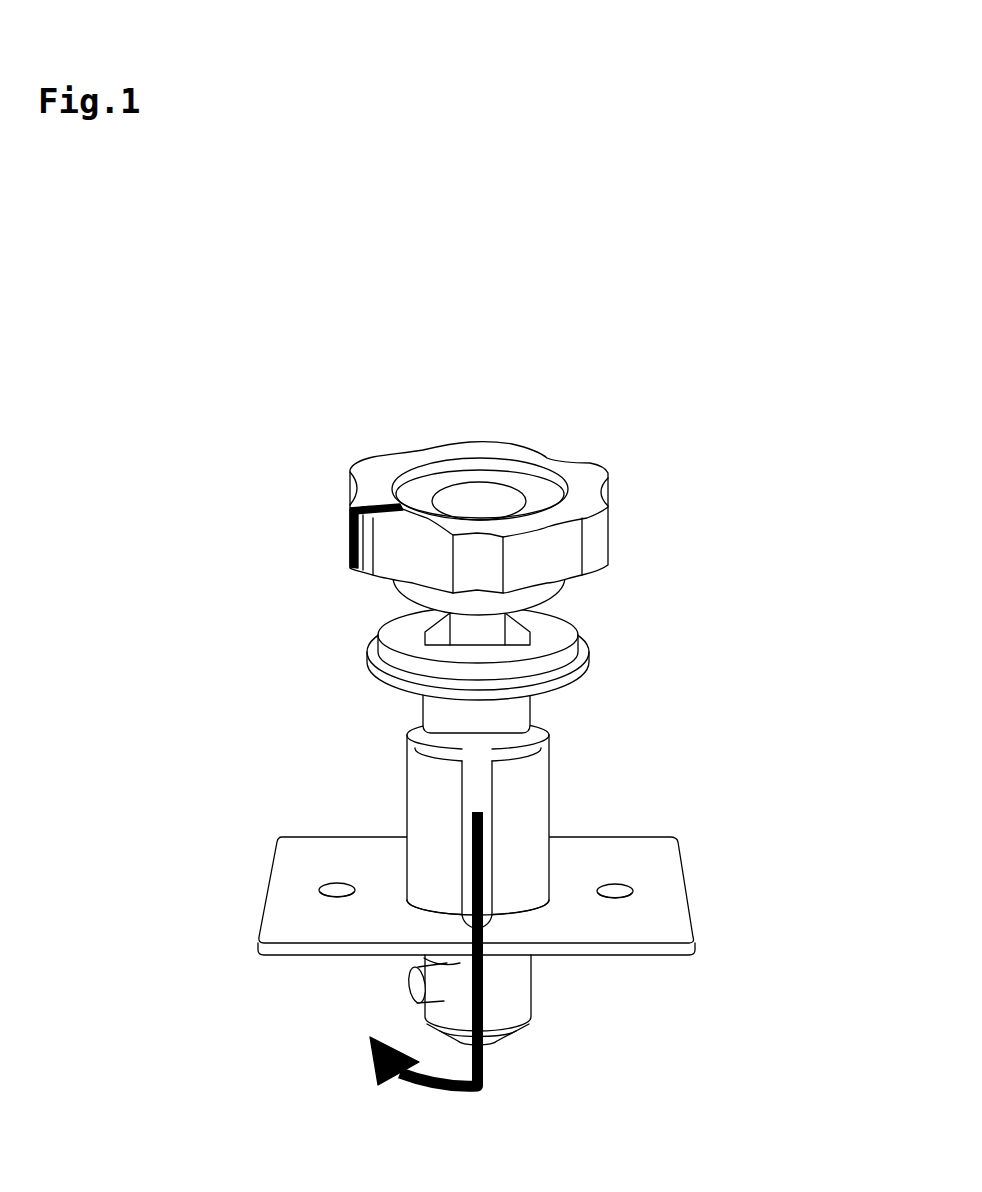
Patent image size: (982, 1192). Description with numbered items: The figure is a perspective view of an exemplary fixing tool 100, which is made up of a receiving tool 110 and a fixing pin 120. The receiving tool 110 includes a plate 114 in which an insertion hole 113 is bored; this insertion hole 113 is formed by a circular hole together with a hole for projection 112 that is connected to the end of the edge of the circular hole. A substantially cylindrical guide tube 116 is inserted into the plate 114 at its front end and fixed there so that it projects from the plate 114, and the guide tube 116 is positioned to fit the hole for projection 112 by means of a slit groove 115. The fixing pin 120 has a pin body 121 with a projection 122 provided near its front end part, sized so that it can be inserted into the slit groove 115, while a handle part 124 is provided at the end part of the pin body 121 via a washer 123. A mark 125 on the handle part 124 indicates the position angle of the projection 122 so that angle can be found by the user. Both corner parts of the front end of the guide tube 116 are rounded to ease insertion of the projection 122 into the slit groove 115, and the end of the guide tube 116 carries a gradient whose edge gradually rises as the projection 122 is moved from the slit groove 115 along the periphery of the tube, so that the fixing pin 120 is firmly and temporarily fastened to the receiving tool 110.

The fixing tool 100 is at (641, 398).
The receiving tool 110 is at (642, 789).
The hole for projection 112 is at (494, 923).
The insertion hole 113 is at (428, 892).
The plate 114 is at (658, 867).
The slit groove 115 is at (480, 792).
The guide tube 116 is at (423, 788).
The fixing pin 120 is at (600, 605).
The pin body 121 is at (440, 714).
The projection 122 is at (415, 987).
The washer 123 is at (372, 651).
The handle part 124 is at (495, 458).
The mark 125 is at (378, 497).